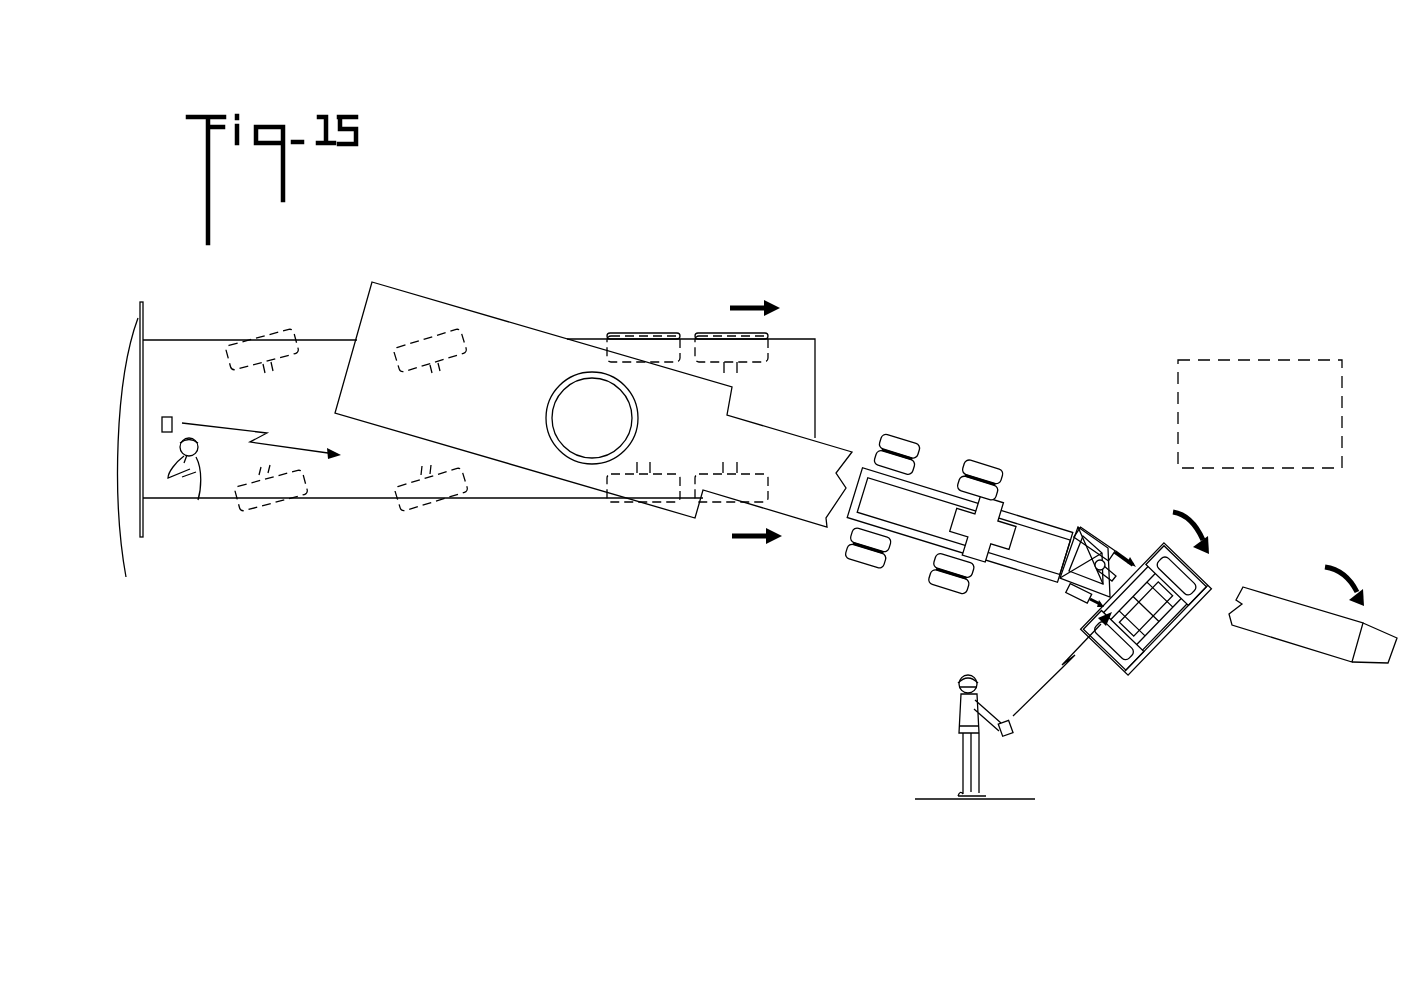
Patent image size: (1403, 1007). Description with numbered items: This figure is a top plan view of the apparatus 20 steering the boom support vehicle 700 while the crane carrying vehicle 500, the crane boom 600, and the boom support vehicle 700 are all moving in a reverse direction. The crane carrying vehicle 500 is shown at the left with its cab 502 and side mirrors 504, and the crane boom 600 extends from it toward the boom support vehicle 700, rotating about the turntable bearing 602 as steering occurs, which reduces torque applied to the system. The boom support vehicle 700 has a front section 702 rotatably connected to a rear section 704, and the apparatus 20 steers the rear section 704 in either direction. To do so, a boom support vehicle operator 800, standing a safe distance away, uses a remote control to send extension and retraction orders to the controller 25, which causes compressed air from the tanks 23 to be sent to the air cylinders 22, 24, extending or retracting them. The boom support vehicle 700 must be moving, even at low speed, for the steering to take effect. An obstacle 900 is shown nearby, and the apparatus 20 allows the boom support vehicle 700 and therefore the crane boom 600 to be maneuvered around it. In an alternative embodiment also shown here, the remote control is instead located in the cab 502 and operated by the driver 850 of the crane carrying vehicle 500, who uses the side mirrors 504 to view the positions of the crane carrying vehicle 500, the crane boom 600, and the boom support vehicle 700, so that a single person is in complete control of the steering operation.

The crane carrying vehicle 500 is at (178, 318).
The cab 502 is at (188, 412).
The side mirrors 504 is at (146, 459).
The driver 850 is at (199, 482).
The turntable bearing 602 is at (602, 403).
The obstacle 900 is at (1236, 400).
The boom support vehicle 700 is at (956, 526).
The front section 702 is at (1045, 557).
The apparatus for steering boom support vehicle 20 is at (1160, 594).
The air cylinder 22 is at (1082, 594).
The air cylinder 24 is at (1086, 529).
The controller 25 is at (1142, 570).
The tanks 23 is at (1148, 624).
The rear section 704 is at (1161, 605).
The crane boom 600 is at (1303, 617).
The boom support vehicle operator 800 is at (960, 712).